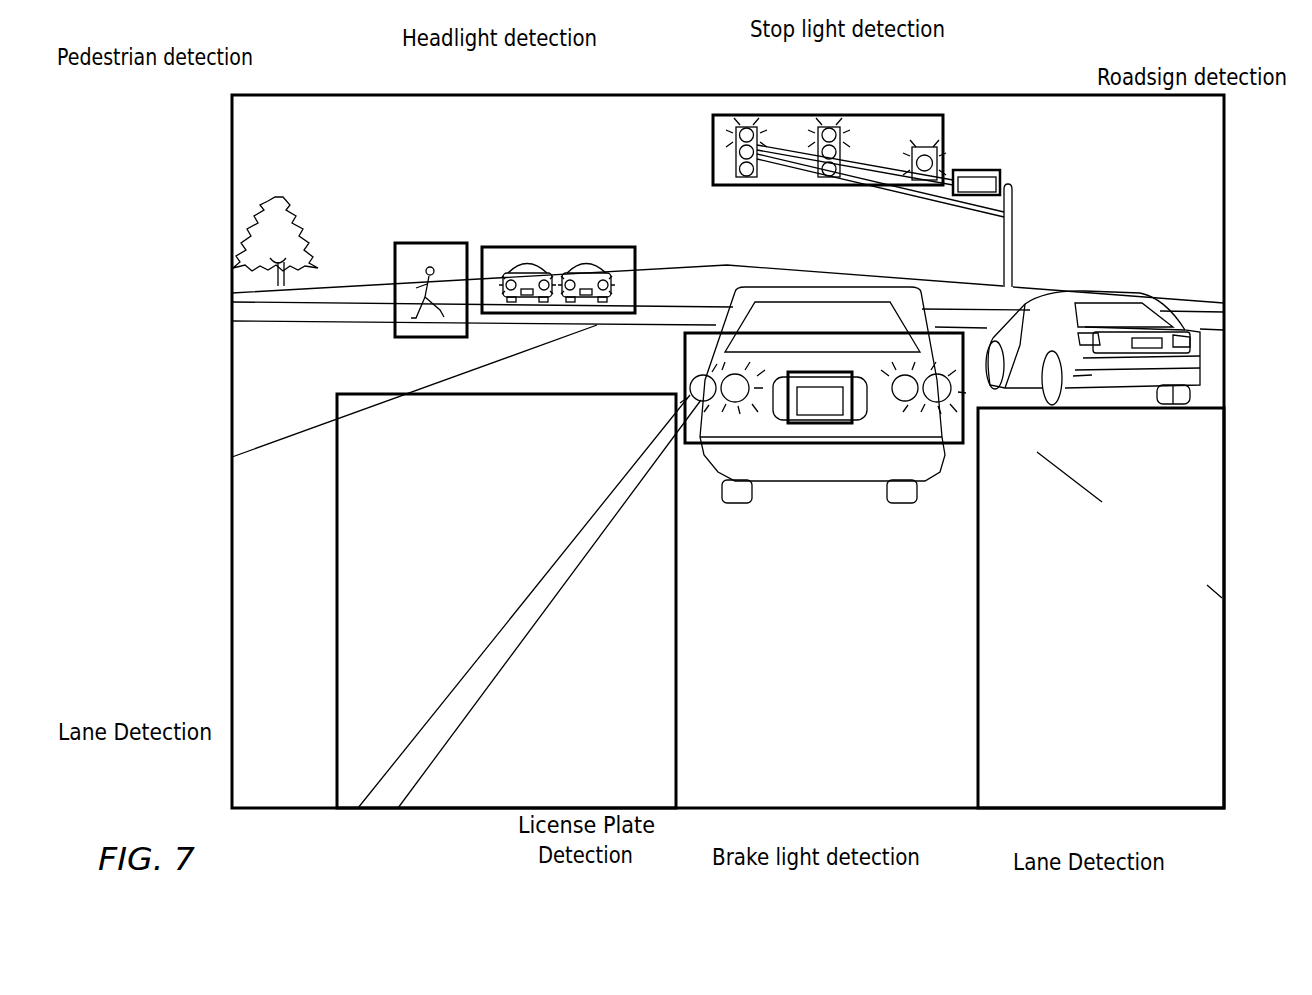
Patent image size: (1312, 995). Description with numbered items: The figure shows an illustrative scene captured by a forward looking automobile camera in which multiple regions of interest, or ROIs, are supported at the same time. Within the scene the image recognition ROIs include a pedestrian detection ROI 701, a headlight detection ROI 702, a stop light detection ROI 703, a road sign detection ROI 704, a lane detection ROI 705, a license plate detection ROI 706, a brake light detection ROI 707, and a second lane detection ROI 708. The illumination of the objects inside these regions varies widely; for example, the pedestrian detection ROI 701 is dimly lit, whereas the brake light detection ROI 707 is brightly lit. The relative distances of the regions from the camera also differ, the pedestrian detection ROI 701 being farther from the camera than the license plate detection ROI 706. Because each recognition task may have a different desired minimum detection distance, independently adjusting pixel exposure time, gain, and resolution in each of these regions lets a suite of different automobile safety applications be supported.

The pedestrian detection ROI 701 is at (420, 242).
The headlight detection ROI 702 is at (565, 245).
The stop light detection ROI 703 is at (801, 113).
The road sign detection ROI 704 is at (988, 163).
The lane detection ROI 705 is at (333, 739).
The license plate detection ROI 706 is at (805, 425).
The brake light detection ROI 707 is at (900, 450).
The lane detection ROI 708 is at (982, 743).